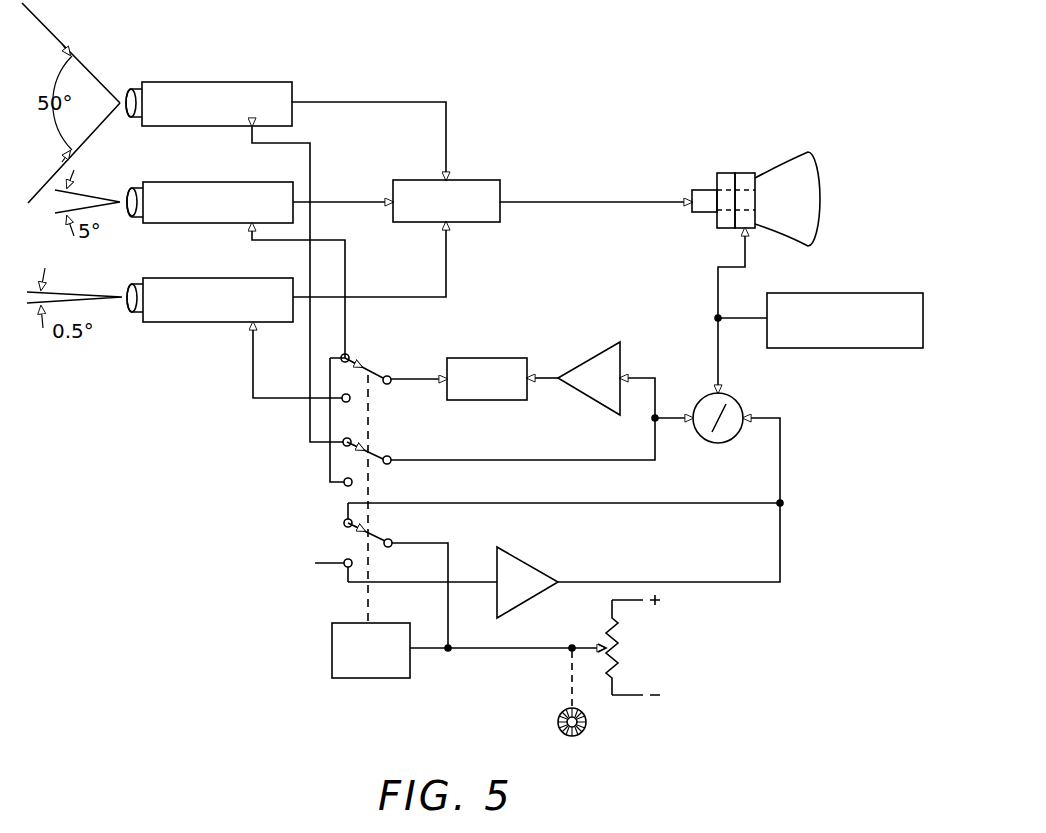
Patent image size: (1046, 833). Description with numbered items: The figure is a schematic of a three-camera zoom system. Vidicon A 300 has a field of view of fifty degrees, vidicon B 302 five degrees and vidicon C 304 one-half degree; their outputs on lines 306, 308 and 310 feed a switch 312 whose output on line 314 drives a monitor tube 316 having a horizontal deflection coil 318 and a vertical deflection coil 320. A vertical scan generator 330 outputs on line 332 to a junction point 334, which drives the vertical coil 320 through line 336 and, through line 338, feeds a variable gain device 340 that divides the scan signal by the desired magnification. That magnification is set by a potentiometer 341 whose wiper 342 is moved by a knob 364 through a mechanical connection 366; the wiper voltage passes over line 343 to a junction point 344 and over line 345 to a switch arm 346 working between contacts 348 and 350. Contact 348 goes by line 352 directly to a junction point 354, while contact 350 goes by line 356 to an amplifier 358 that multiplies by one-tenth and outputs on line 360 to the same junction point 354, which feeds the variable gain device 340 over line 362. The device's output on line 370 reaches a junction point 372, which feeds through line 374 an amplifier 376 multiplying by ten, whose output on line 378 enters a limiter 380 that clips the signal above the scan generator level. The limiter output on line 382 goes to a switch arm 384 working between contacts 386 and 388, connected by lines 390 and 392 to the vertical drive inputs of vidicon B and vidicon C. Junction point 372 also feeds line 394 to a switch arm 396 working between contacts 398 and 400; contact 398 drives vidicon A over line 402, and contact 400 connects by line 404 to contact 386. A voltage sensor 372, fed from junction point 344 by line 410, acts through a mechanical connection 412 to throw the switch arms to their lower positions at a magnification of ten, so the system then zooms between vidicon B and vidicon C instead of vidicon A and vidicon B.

The vidicon A 300 is at (163, 82).
The vidicon B 302 is at (152, 182).
The vidicon C 304 is at (152, 278).
The line 306 is at (345, 101).
The line 308 is at (327, 201).
The line 310 is at (400, 296).
The switch 312 is at (470, 222).
The line 314 is at (548, 201).
The monitor tube 316 is at (808, 165).
The horizontal deflection coil 318 is at (718, 173).
The vertical deflection coil 320 is at (741, 173).
The vertical scan generator 330 is at (838, 293).
The line 332 is at (743, 320).
The junction point 334 is at (715, 318).
The line 336 is at (747, 258).
The line 338 is at (716, 345).
The variable gain device 340 is at (740, 400).
The potentiometer 341 is at (622, 650).
The wiper 342 is at (598, 644).
The line 343 is at (478, 648).
The junction point 344 is at (460, 650).
The line 345 is at (448, 612).
The switch arm 346 is at (392, 540).
The switch contact 348 is at (344, 522).
The switch contact 350 is at (307, 566).
The line 352 is at (605, 503).
The junction point 354 is at (782, 502).
The line 356 is at (465, 582).
The amplifier 358 is at (525, 565).
The line 360 is at (635, 581).
The line 362 is at (782, 442).
The knob 364 is at (588, 722).
The mechanical connection 366 is at (568, 683).
The line 370 is at (678, 415).
The junction point / voltage sensor 372 is at (654, 418).
The line 374 is at (640, 376).
The amplifier 376 is at (603, 403).
The line 378 is at (552, 375).
The limiter 380 is at (465, 400).
The line 382 is at (425, 378).
The switch arm 384 is at (400, 362).
The switch contact 386 is at (350, 357).
The switch contact 388 is at (358, 398).
The line 390 is at (348, 262).
The line 392 is at (253, 350).
The line 394 is at (495, 461).
The switch arm 396 is at (392, 458).
The switch contact 398 is at (352, 440).
The switch contact 400 is at (345, 485).
The line 402 is at (310, 368).
The line 404 is at (328, 460).
The line 410 is at (420, 650).
The mechanical connection 412 is at (368, 600).